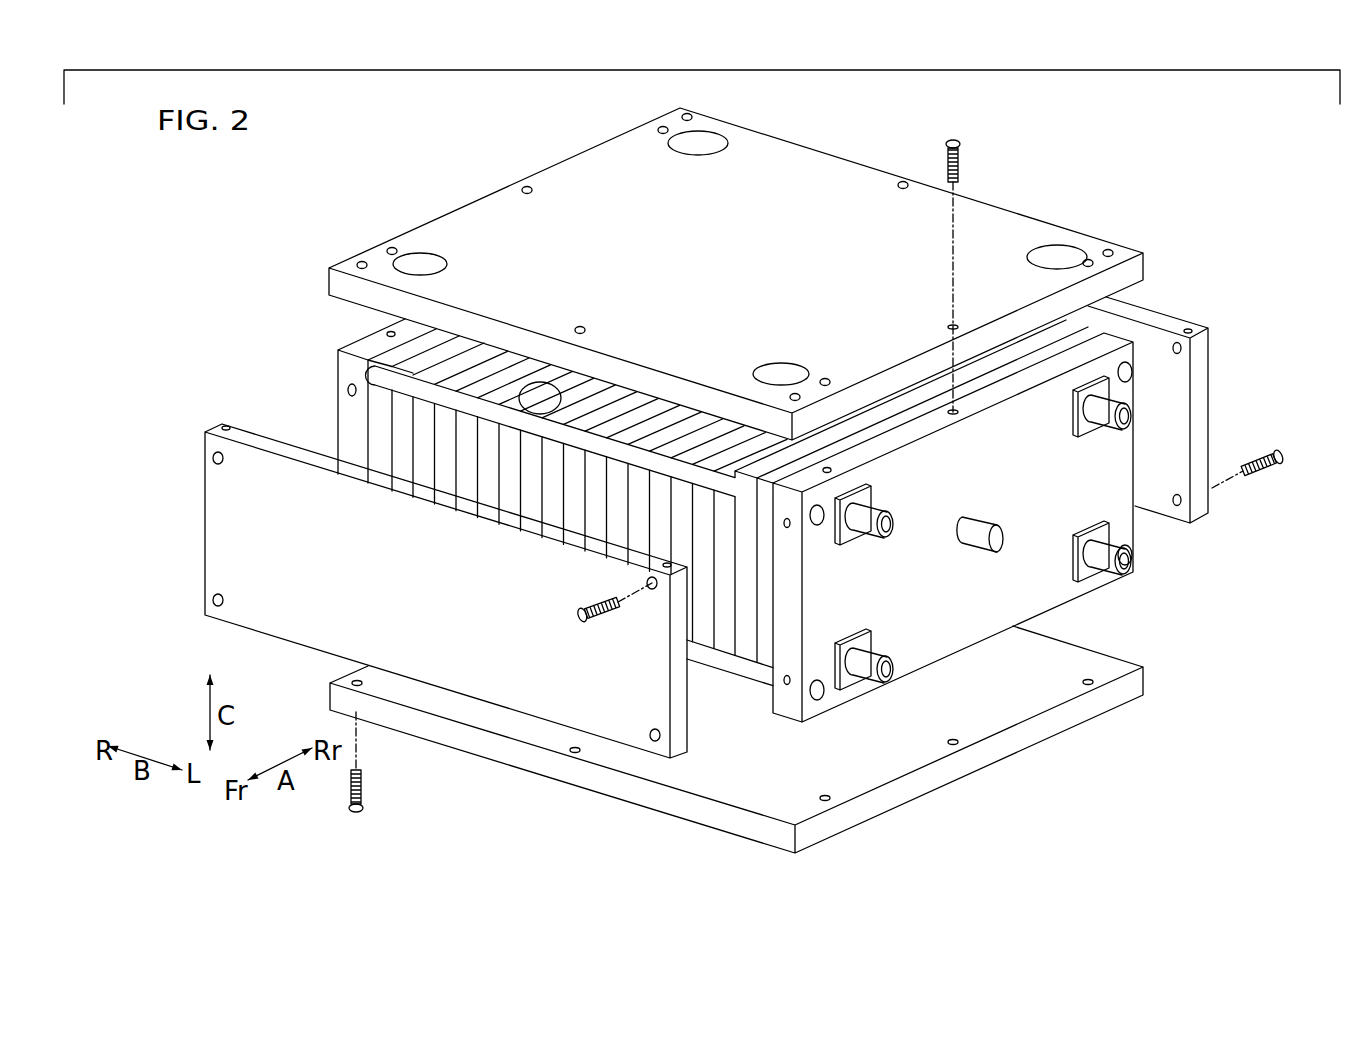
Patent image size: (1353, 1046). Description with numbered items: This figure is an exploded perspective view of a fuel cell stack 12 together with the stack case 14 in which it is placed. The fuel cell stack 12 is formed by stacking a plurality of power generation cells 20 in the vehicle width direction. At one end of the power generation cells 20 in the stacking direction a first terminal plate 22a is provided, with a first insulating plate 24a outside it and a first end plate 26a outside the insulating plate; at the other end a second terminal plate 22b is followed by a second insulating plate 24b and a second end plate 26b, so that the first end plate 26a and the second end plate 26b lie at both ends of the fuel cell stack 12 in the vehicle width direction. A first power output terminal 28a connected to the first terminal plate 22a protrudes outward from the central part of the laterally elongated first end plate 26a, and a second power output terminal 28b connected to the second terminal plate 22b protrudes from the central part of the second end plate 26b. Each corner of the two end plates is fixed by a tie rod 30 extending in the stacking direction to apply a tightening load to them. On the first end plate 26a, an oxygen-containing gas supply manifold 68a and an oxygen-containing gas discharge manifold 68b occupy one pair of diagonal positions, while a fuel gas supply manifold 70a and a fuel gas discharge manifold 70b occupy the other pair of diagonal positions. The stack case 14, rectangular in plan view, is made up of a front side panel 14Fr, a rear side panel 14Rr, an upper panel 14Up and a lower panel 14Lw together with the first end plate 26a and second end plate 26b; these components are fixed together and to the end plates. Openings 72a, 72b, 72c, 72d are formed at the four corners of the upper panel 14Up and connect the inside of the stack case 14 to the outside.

The fuel cell stack 12 is at (255, 193).
The stack case 14 is at (503, 170).
The upper panel 14Up is at (878, 186).
The lower panel 14Lw is at (1033, 735).
The front side panel 14Fr is at (272, 470).
The rear side panel 14Rr is at (1200, 388).
The power generation cells 20 is at (600, 482).
The first terminal plate 22a is at (746, 474).
The second terminal plate 22b is at (427, 463).
The first insulating plate 24a is at (764, 481).
The second insulating plate 24b is at (404, 462).
The first end plate 26a is at (1141, 389).
The second end plate 26b is at (344, 339).
The first power output terminal 28a is at (978, 545).
The second power output terminal 28b is at (548, 398).
The tie rod 30 is at (1133, 362).
The oxygen-containing gas supply manifold 68a is at (1097, 413).
The oxygen-containing gas discharge manifold 68b is at (860, 667).
The fuel gas supply manifold 70a is at (873, 508).
The fuel gas discharge manifold 70b is at (1102, 570).
The opening 72a is at (443, 268).
The opening 72b is at (696, 150).
The opening 72c is at (798, 372).
The opening 72d is at (1059, 260).